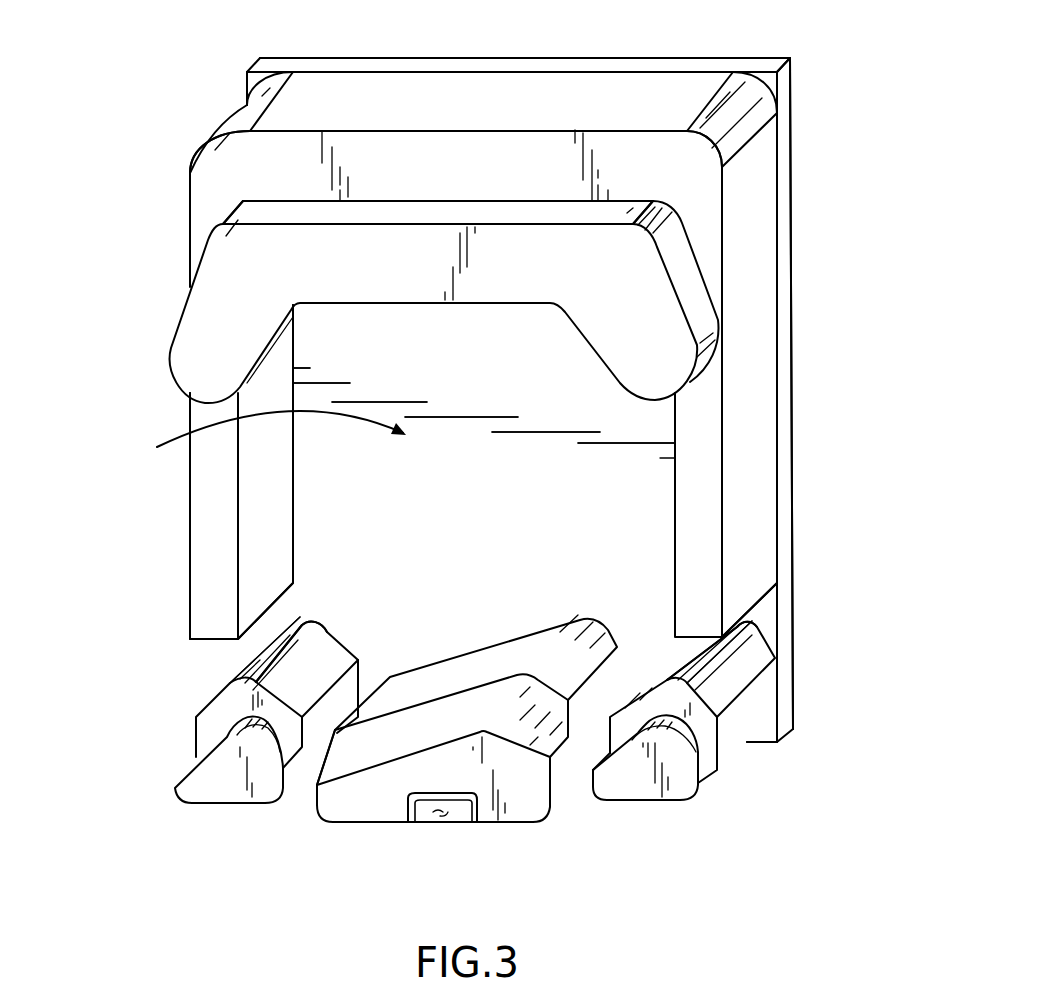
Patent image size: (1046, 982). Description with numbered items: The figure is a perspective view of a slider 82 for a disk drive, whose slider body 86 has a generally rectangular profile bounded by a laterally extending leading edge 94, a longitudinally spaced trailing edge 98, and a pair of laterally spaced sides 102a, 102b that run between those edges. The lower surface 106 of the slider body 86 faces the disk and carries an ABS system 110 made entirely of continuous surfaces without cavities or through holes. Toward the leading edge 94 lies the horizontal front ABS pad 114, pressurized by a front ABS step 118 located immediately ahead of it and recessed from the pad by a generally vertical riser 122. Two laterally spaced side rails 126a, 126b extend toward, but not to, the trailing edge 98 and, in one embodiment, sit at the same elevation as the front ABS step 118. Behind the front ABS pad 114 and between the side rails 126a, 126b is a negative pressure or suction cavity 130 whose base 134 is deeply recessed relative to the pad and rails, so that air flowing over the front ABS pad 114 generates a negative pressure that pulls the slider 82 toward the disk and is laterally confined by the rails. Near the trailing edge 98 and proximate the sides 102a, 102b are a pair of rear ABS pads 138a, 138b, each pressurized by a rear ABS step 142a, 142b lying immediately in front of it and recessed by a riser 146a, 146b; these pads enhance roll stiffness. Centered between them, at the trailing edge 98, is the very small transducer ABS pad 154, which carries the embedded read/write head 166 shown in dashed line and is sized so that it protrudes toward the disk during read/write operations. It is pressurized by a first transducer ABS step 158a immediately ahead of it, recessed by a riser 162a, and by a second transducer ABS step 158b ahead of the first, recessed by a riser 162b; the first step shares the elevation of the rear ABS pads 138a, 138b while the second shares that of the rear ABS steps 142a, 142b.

The slider 82 is at (793, 58).
The slider body 86 is at (755, 443).
The leading edge 94 is at (625, 58).
The trailing edge 98 is at (763, 745).
The side 102a is at (245, 652).
The side 102b is at (792, 526).
The lower surface 106 is at (763, 627).
The ABS system 110 is at (157, 302).
The front ABS pad 114 is at (438, 280).
The front ABS step 118 is at (481, 176).
The riser 122 is at (495, 213).
The side rail 126a is at (190, 485).
The side rail 126b is at (676, 508).
The negative pressure cavity 130 is at (262, 437).
The base of cavity 134 is at (486, 480).
The rear ABS pad 138a is at (238, 794).
The rear ABS pad 138b is at (653, 792).
The rear ABS step 142a is at (263, 707).
The rear ABS step 142b is at (658, 700).
The riser 146a is at (258, 744).
The riser 146b is at (680, 740).
The transducer ABS pad 154 is at (420, 813).
The first transducer ABS step 158a is at (475, 785).
The second transducer ABS step 158b is at (490, 725).
The riser 162a is at (373, 760).
The riser 162b is at (490, 685).
The read/write head 166 is at (443, 813).